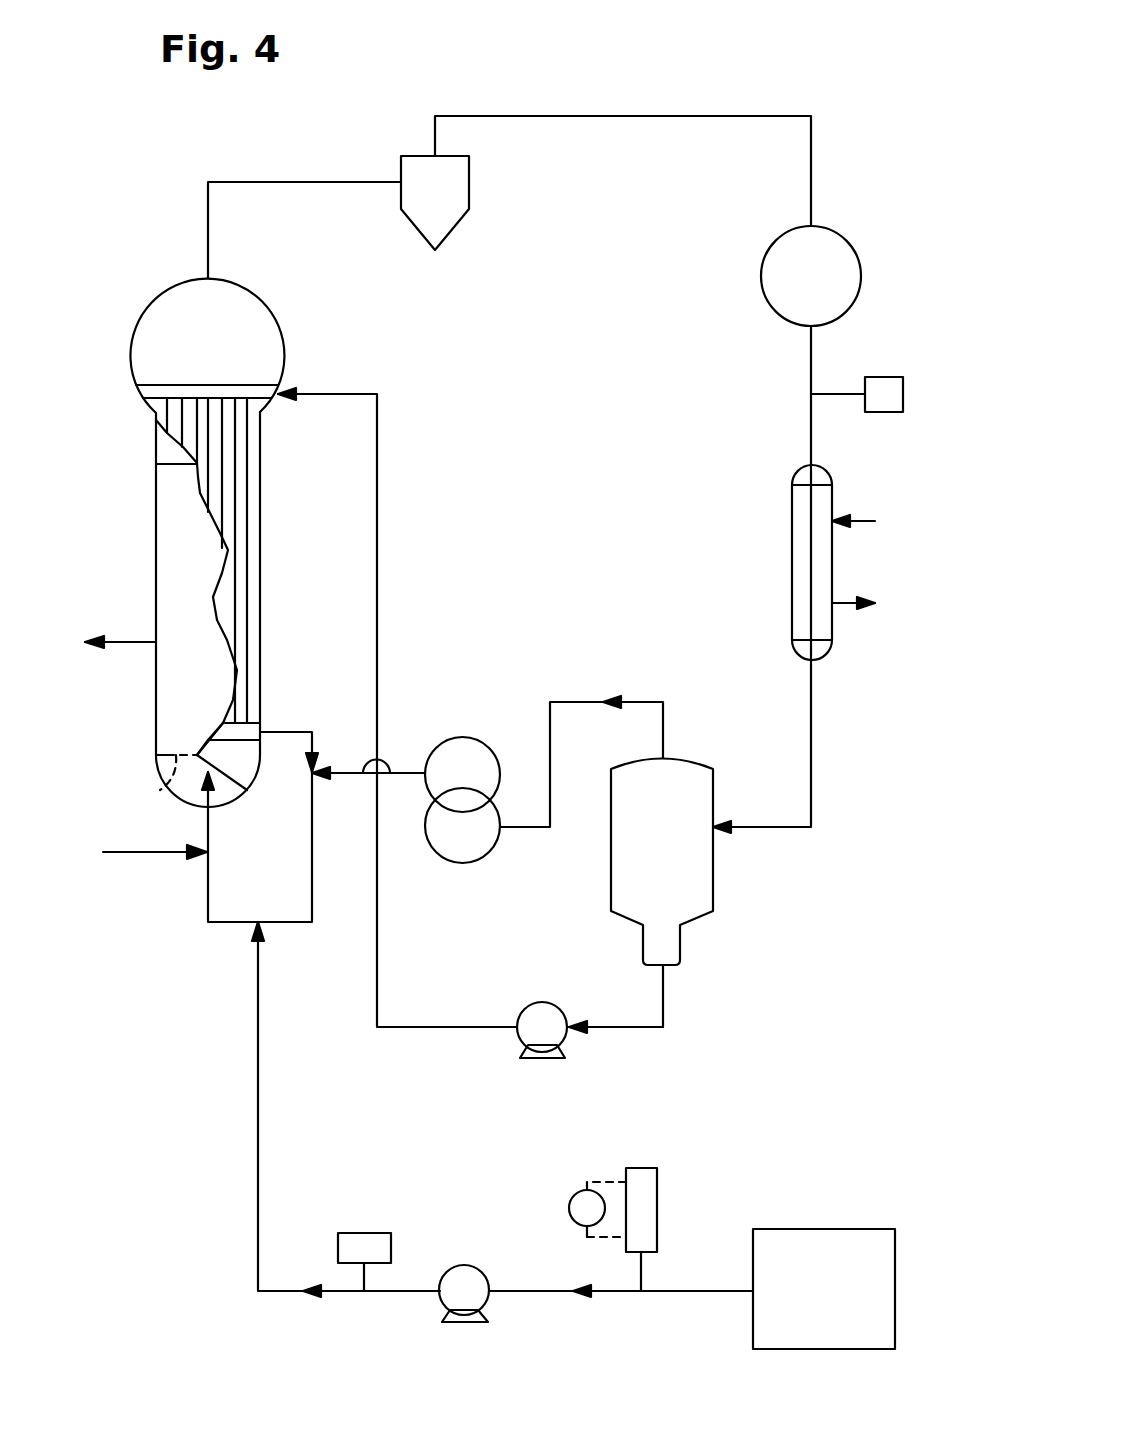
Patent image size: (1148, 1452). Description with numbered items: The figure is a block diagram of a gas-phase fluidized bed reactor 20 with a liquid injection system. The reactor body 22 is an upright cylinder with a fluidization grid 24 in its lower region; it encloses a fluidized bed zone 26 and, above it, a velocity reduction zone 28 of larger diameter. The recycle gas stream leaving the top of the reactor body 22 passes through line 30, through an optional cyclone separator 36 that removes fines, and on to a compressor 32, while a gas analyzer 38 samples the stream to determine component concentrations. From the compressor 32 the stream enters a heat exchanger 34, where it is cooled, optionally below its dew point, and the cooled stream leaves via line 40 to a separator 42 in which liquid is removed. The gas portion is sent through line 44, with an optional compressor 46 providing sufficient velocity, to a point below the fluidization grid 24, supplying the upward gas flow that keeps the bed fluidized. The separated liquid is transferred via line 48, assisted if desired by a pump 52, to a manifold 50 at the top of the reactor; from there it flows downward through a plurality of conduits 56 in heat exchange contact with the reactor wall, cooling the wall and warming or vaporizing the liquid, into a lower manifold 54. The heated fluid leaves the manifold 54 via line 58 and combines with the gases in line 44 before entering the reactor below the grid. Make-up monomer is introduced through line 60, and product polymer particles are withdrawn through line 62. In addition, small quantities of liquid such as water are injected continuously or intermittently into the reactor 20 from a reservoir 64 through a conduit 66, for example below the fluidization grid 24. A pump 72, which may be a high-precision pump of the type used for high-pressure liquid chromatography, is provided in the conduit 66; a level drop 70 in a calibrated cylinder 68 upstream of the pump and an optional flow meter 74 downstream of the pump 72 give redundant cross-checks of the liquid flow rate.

The gas-phase fluidized bed reactor 20 is at (843, 50).
The reactor body 22 is at (155, 512).
The fluidization grid 24 is at (163, 790).
The fluidized bed zone 26 is at (168, 595).
The velocity reduction zone 28 is at (152, 330).
The line 30 is at (292, 182).
The compressor 32 is at (778, 262).
The heat exchanger 34 is at (797, 542).
The cyclone separator 36 is at (447, 207).
The gas analyzer 38 is at (883, 392).
The line 40 is at (813, 752).
The separator 42 is at (697, 873).
The line 44 is at (525, 830).
The compressor 46 is at (467, 853).
The line 48 is at (378, 540).
The manifold 50 is at (198, 383).
The pump 52 is at (552, 1032).
The manifold 54 is at (252, 727).
The conduits 56 is at (258, 522).
The line 58 is at (313, 742).
The line 60 is at (157, 855).
The line 62 is at (128, 643).
The reservoir 64 is at (822, 1245).
The conduit 66 is at (713, 1292).
The calibrated cylinder 68 is at (648, 1205).
The level drop 70 is at (577, 1200).
The pump 72 is at (465, 1280).
The flow meter 74 is at (361, 1243).